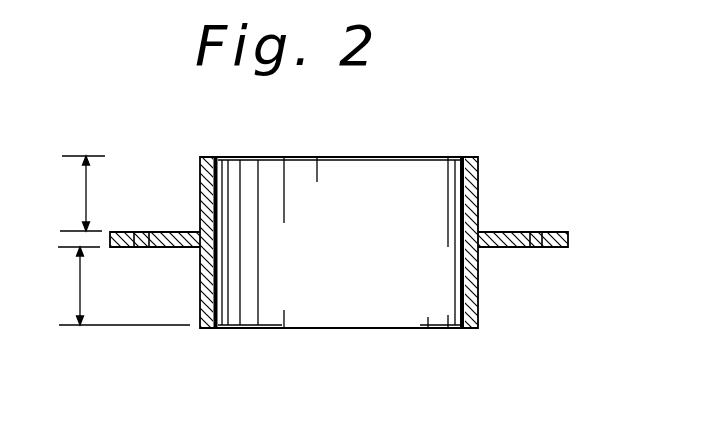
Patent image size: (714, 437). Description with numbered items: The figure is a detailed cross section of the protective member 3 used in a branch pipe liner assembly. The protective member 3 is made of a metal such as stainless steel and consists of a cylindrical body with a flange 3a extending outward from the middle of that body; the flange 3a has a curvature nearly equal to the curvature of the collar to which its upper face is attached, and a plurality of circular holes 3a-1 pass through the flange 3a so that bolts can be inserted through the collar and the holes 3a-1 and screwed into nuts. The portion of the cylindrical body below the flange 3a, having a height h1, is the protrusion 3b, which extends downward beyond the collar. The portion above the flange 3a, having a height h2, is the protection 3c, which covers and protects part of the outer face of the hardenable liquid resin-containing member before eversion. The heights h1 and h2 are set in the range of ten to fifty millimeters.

The protective member 3 is at (478, 145).
The flange 3a is at (558, 248).
The circular holes 3a-1 is at (143, 237).
The protrusion 3b is at (198, 307).
The protection 3c is at (200, 170).
The height of protrusion h1 is at (118, 286).
The height of protection h2 is at (77, 193).